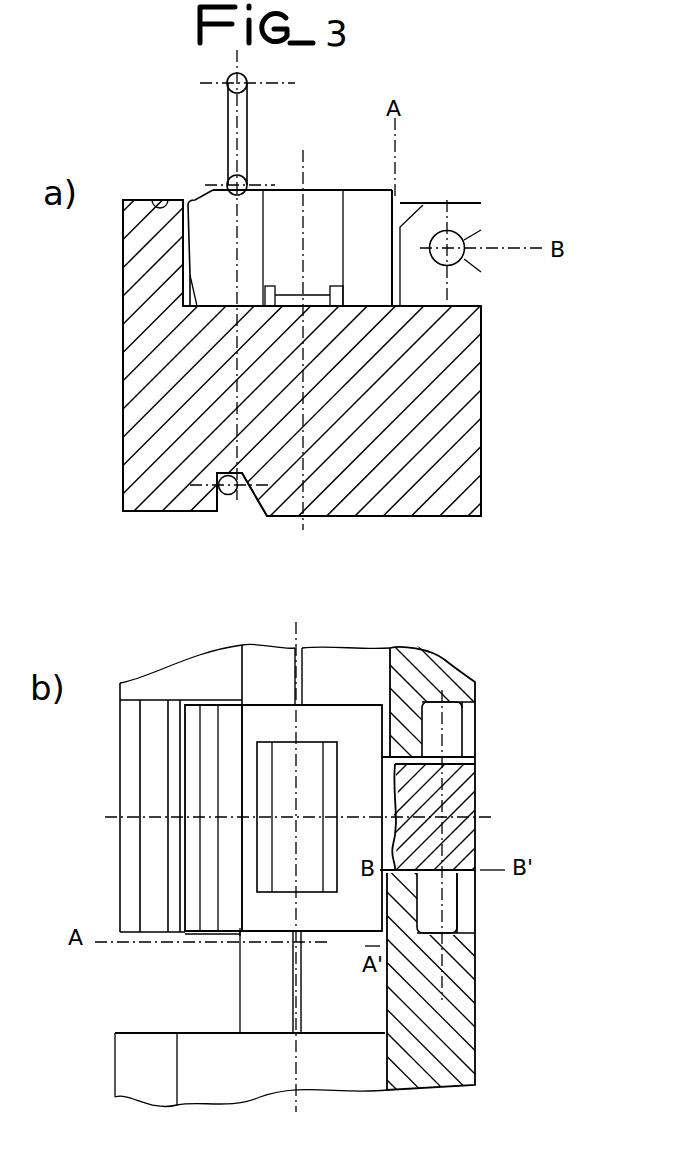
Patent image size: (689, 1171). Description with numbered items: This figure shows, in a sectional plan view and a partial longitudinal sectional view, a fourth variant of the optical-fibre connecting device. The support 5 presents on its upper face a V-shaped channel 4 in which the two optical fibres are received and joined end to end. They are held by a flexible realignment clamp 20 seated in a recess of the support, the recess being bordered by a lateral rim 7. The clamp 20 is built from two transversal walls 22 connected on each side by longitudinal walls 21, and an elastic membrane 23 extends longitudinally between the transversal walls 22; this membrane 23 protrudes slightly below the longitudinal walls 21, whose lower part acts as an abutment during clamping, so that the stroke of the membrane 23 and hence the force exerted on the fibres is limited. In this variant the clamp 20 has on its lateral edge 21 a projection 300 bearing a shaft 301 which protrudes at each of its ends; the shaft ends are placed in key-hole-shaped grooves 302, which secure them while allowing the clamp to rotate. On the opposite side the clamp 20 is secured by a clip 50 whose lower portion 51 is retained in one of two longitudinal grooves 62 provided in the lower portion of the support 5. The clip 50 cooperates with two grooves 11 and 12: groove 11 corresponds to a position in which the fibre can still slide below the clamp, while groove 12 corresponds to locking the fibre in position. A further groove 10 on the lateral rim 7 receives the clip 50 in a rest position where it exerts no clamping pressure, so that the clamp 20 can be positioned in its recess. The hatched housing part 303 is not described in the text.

In FIG. 3a, the V-shaped channel 4 is at (318, 314).
In FIG. 3b, the V-shaped channel 4 is at (295, 680).
In FIG. 3a, the support 5 is at (150, 390).
In FIG. 3b, the lateral rim 7 is at (125, 860).
In FIG. 3a, the groove 10 is at (160, 197).
In FIG. 3b, the groove 10 is at (148, 766).
In FIG. 3a, the groove 11 is at (196, 198).
In FIG. 3b, the groove 11 is at (190, 934).
In FIG. 3a, the groove 12 is at (250, 183).
In FIG. 3b, the groove 12 is at (230, 934).
In FIG. 3a, the flexible clamp 20 is at (320, 168).
In FIG. 3b, the flexible clamp 20 is at (344, 725).
In FIG. 3b, the longitudinal wall 21 is at (208, 715).
In FIG. 3b, the transversal wall 22 is at (270, 700).
In FIG. 3a, the elastic membrane 23 is at (345, 300).
In FIG. 3b, the elastic membrane 23 is at (310, 758).
In FIG. 3a, the clip 50 is at (213, 123).
In FIG. 3a, the lower portion of clip 51 is at (233, 496).
In FIG. 3a, the longitudinal groove 62 is at (250, 500).
In FIG. 3a, the projection 300 is at (402, 200).
In FIG. 3a, the shaft 301 is at (440, 258).
In FIG. 3b, the shaft 301 is at (454, 735).
In FIG. 3a, the key-hole-shaped groove 302 is at (480, 243).
In FIG. 3b, the key-hole-shaped groove 302 is at (476, 720).
In FIG. 3a, the housing block 303 is at (440, 215).
In FIG. 3b, the housing block 303 is at (428, 678).